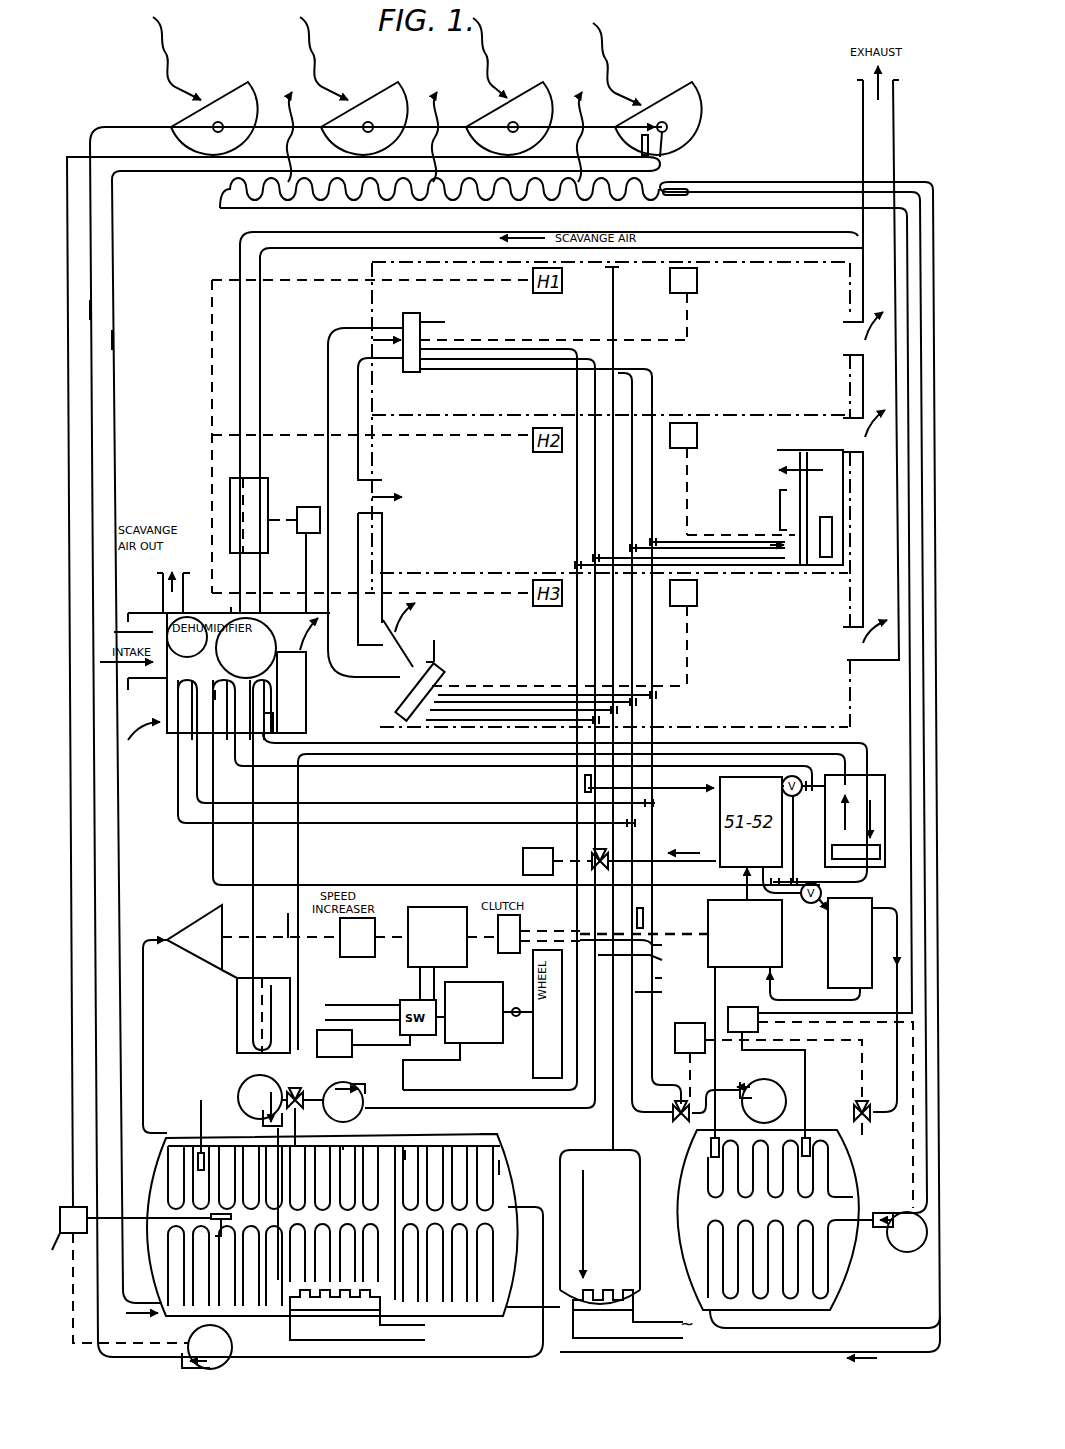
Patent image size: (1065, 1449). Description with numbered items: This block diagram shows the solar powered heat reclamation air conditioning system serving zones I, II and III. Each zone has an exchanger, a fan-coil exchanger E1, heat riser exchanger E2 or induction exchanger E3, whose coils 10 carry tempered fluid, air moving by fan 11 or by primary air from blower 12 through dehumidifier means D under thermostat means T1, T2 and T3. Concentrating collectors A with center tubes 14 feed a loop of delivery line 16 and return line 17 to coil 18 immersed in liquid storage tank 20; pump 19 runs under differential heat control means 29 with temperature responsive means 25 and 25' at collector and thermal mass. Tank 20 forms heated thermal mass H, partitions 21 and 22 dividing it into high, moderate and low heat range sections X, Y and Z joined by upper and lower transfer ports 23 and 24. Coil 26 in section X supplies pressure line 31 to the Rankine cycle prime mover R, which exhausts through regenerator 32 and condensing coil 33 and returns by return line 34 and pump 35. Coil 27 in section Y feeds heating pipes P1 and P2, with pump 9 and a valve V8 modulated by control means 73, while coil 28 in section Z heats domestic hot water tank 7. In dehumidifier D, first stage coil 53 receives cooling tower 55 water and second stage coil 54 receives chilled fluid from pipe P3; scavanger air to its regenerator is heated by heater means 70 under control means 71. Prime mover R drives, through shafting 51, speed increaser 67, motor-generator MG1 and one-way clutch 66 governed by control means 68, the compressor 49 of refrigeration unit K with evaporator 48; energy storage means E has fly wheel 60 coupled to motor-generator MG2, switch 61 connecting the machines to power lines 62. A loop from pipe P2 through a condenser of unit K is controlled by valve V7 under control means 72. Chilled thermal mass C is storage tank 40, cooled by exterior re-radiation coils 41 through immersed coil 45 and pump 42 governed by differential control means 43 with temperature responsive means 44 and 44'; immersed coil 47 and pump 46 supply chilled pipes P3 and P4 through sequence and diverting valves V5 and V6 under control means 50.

The center tube 14 is at (225, 133).
The concentrating collectors A is at (245, 80).
The temperature responsive means 25 is at (677, 146).
The temperature responsive means 44' is at (703, 176).
The exterior heat exchange means 41 is at (438, 195).
The delivery line 16 is at (90, 311).
The return line 17 is at (112, 344).
The fan-coil exchanger E1 is at (425, 338).
The coils 10 is at (410, 365).
The heat riser exchanger E2 is at (780, 513).
The fan 11 is at (826, 557).
The zone I is at (730, 304).
The zone II is at (495, 478).
The zone III is at (740, 624).
The thermostat means T1 is at (683, 280).
The thermostat means T2 is at (683, 435).
The thermostat means T3 is at (683, 593).
The induction exchanger E3 is at (445, 645).
The heater means 70 is at (268, 490).
The control means 71 is at (295, 520).
The blower 12 is at (244, 634).
The first stage contactor coil 53 is at (216, 682).
The condensing coil 33 is at (263, 694).
The second stage contactor coil 54 is at (178, 698).
The dehumidifier means D is at (160, 725).
The return line 34 is at (298, 858).
The Rankine cycle prime mover R is at (187, 936).
The drive chain 51 is at (273, 912).
The speed changer 67 is at (352, 948).
The motor-generator MG1 is at (455, 905).
The clutch 66 is at (510, 920).
The fly wheel 60 is at (533, 975).
The energy storage means E is at (470, 982).
The motor-generator MG2 is at (465, 1045).
The power lines 62 is at (340, 1003).
The switch 61 is at (392, 1003).
The control means 73 is at (334, 1043).
The regenerator 32 is at (237, 997).
The pressure line 31 is at (143, 1052).
The control means 72 is at (538, 861).
The valve V7 is at (594, 850).
The control means 68 is at (640, 908).
The cooling tower 55 is at (875, 778).
The compressor 49 is at (745, 933).
The evaporator 48 is at (850, 943).
The refrigeration unit K is at (785, 942).
The supply pipe P1 is at (633, 946).
The return pipe P2 is at (642, 961).
The supply pipe P3 is at (671, 977).
The return pipe P4 is at (661, 992).
The differential control means 43 is at (752, 1007).
The control means 50 is at (692, 1008).
The pump 46 is at (775, 1080).
The diverting valve V6 is at (679, 1118).
The sequence valve V5 is at (853, 1113).
The liquid storage tank 40 is at (850, 1283).
The chilled thermal mass C is at (688, 1197).
The heat exchange coil 47 is at (822, 1167).
The temperature responsive means 44 is at (804, 1139).
The heat exchange coil 45 is at (828, 1256).
The pump 42 is at (900, 1212).
The tank 7 is at (597, 1214).
The heat exchanging coil 18 is at (160, 1275).
The heated thermal mass H is at (157, 1184).
The high heat range section X is at (225, 1226).
The moderate heat range section Y is at (334, 1214).
The low heat range section Z is at (448, 1224).
The heat transfer coil 26 is at (200, 1152).
The partition 21 is at (275, 1150).
The heat transfer coil 27 is at (344, 1147).
The upper transfer ports 23 is at (400, 1146).
The partition 22 is at (408, 1155).
The liquid storage tank 20 is at (497, 1134).
The heat transfer coil 28 is at (500, 1170).
The temperature responsive means 25' is at (159, 1234).
The differential heat control means 29 is at (60, 1236).
The lower transfer ports 24 is at (280, 1312).
The pump 19 is at (207, 1347).
The pump 35 is at (245, 1090).
The valve V8 is at (298, 1108).
The pump 9 is at (344, 1102).